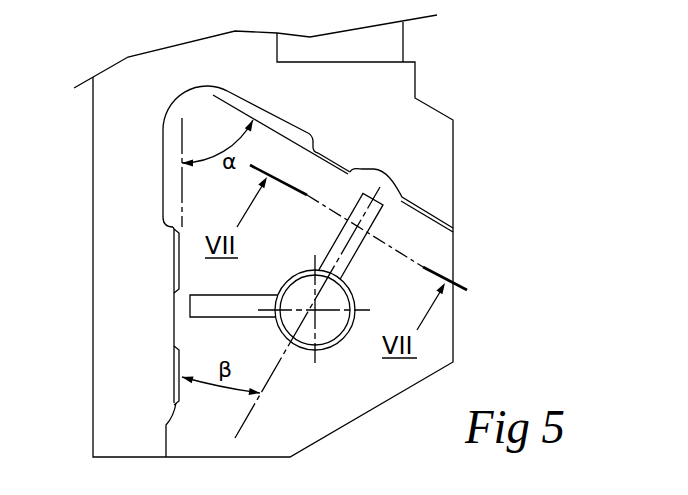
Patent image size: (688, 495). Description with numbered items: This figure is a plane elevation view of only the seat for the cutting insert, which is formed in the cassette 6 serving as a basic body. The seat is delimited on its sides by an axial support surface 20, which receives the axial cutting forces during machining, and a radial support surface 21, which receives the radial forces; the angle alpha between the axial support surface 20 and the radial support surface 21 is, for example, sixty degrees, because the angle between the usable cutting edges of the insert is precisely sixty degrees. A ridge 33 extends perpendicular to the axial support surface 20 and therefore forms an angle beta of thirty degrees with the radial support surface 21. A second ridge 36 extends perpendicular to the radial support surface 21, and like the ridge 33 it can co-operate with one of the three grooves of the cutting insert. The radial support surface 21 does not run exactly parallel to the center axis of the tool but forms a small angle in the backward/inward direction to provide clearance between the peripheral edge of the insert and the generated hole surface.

The cassette 6 is at (438, 100).
The axial support surface 20 is at (340, 172).
The radial support surface 21 is at (180, 259).
The ridge 33 is at (360, 256).
The second ridge 36 is at (247, 289).